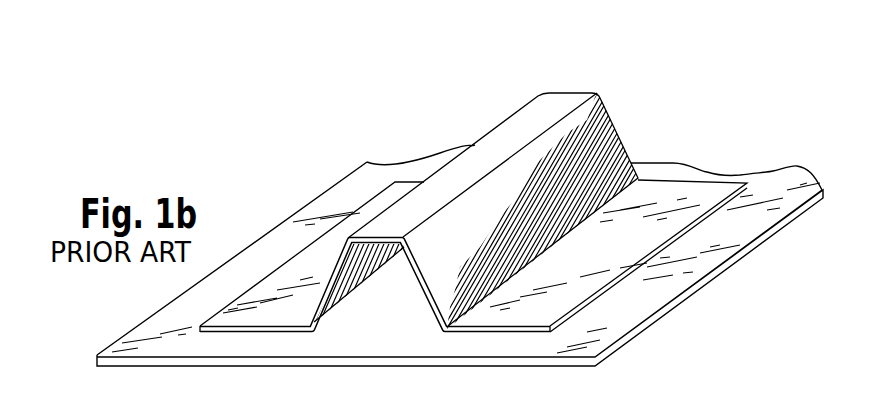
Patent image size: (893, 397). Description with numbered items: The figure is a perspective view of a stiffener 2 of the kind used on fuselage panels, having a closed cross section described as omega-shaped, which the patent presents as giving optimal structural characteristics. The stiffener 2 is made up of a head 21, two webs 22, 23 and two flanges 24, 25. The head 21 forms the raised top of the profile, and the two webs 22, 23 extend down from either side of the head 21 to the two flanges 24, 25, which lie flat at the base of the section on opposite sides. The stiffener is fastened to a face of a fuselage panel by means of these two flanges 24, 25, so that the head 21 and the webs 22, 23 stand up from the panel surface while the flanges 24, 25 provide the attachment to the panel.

The stiffener 2 is at (481, 110).
The head 21 is at (562, 98).
The web 22 is at (333, 270).
The web 23 is at (607, 138).
The flange 24 is at (275, 283).
The flange 25 is at (553, 304).